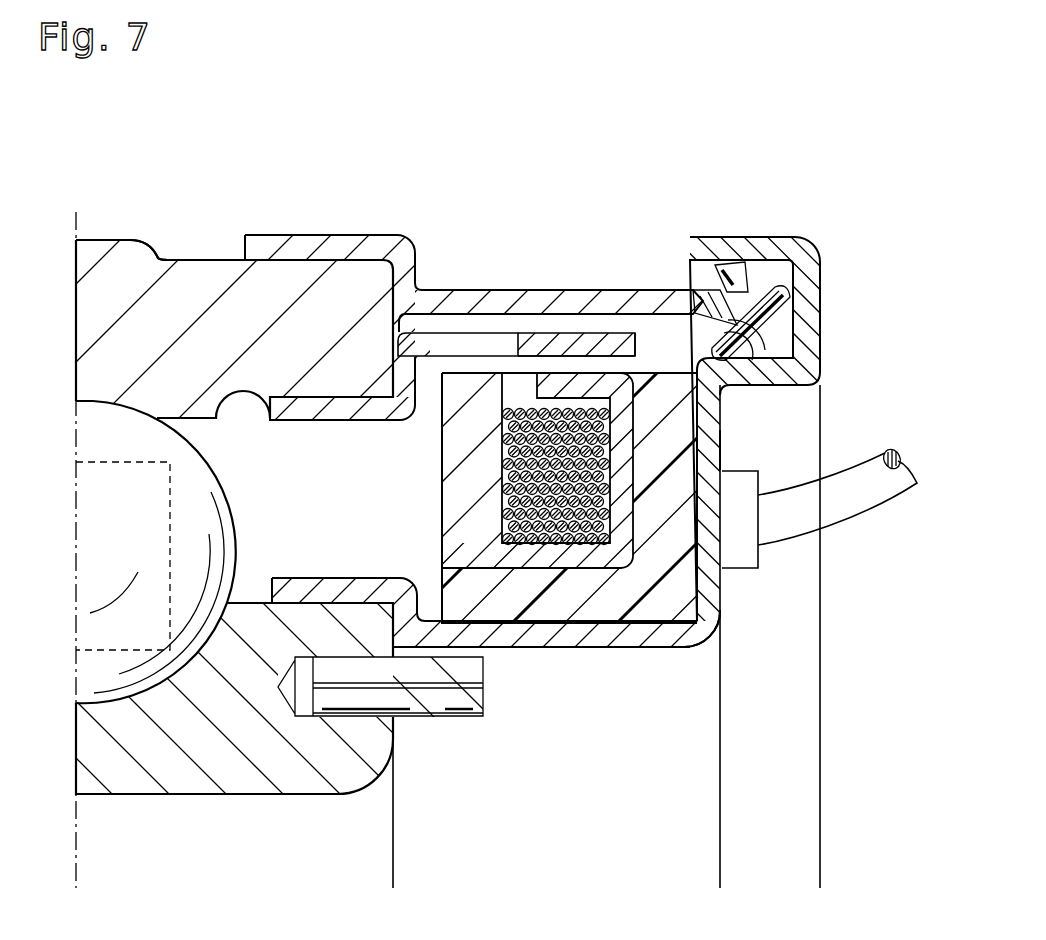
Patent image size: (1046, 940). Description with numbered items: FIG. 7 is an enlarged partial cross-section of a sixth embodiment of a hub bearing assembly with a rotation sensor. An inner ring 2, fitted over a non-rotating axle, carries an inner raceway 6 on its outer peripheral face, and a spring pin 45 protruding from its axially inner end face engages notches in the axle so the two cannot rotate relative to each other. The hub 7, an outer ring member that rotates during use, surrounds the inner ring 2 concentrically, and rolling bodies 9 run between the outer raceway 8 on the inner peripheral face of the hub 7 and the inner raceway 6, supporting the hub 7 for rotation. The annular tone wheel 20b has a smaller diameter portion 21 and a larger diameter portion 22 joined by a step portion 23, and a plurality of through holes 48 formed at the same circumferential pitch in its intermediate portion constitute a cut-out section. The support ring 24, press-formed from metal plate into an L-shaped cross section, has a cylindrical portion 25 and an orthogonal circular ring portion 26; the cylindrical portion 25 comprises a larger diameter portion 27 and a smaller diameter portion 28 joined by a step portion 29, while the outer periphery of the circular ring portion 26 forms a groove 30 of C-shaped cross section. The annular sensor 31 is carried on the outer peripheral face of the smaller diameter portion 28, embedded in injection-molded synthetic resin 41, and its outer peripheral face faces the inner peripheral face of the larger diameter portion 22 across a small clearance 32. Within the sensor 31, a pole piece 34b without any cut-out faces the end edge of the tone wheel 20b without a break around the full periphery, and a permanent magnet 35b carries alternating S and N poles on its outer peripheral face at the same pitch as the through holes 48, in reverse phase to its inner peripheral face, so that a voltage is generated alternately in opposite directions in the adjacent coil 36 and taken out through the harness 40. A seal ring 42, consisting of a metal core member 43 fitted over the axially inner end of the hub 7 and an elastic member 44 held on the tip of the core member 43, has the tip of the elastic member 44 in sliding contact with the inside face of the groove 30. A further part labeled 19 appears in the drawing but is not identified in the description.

The inner ring 2 is at (237, 763).
The inner raceway 6 is at (170, 680).
The hub 7 is at (165, 287).
The outer raceway 8 is at (113, 404).
The rolling bodies 9 is at (190, 523).
The seal 19 is at (305, 537).
The tone wheel 20b is at (612, 337).
The smaller diameter portion 21 is at (307, 402).
The larger diameter portion 22 is at (578, 345).
The step portion 23 is at (397, 373).
The support ring 24 is at (707, 597).
The cylindrical portion 25 is at (680, 638).
The circular ring portion 26 is at (712, 566).
The larger diameter portion 27 is at (333, 590).
The smaller diameter portion 28 is at (628, 632).
The step portion 29 is at (427, 640).
The groove 30 is at (730, 276).
The sensor 31 is at (523, 590).
The clearance 32 is at (503, 365).
The pole piece 34b is at (723, 437).
The permanent magnet 35b is at (457, 437).
The coil 36 is at (753, 367).
The harness 40 is at (863, 503).
The synthetic resin 41 is at (705, 587).
The seal ring 42 is at (550, 298).
The core member 43 is at (287, 250).
The elastic member 44 is at (715, 278).
The spring pin 45 is at (470, 706).
The through holes 48 is at (440, 338).